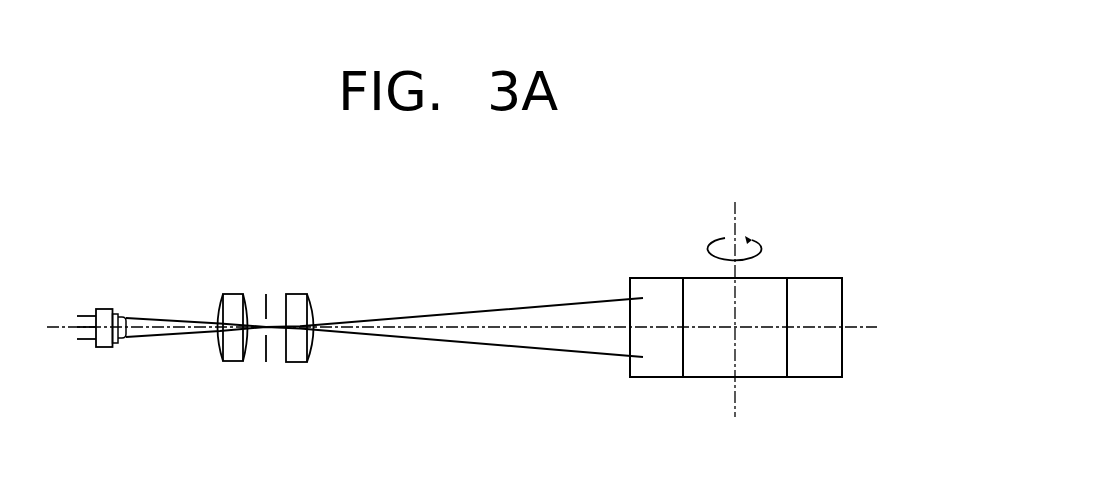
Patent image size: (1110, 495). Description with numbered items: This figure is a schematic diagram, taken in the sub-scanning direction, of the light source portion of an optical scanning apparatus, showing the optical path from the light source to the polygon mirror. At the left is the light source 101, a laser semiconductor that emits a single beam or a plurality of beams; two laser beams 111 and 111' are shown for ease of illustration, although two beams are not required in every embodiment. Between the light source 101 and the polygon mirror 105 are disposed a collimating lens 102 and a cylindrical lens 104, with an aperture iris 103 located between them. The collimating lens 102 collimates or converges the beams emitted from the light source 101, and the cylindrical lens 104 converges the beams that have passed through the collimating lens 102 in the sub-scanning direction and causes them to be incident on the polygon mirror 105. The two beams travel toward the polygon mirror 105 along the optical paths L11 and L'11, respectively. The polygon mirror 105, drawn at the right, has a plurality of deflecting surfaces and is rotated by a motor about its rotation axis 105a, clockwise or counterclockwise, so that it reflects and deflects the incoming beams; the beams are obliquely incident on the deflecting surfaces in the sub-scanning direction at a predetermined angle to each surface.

The light source 101 is at (102, 308).
The collimating lens 102 is at (233, 362).
The aperture iris 103 is at (266, 296).
The cylindrical lens 104 is at (297, 362).
The polygon mirror 105 is at (656, 377).
The rotation axis 105a is at (735, 219).
The laser beam 111 is at (155, 359).
The laser beam 111' is at (384, 305).
The optical path L11 is at (465, 310).
The optical path L'11 is at (499, 384).